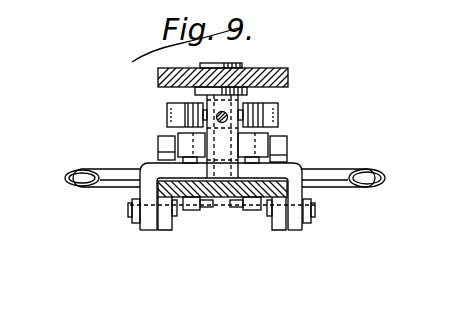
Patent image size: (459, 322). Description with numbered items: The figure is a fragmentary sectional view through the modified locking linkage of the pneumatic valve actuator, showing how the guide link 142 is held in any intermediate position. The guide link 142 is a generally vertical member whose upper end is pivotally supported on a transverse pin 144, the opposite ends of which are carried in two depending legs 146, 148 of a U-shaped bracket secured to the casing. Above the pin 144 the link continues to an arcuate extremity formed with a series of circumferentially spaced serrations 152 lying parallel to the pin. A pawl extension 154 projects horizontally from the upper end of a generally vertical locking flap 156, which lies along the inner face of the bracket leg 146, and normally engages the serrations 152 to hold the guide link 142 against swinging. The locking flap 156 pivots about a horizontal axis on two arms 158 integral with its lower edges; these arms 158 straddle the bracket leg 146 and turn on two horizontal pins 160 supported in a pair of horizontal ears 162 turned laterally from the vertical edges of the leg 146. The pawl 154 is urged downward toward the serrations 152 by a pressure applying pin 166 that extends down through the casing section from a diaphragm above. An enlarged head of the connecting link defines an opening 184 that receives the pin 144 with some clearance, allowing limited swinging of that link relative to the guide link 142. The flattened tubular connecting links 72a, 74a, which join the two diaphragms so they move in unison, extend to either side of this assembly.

The flattened tubular connecting link 72a is at (100, 190).
The flattened tubular connecting link 74a is at (398, 158).
The guide link 142 is at (280, 109).
The transverse pin 144 is at (226, 63).
The depending leg 146 is at (259, 208).
The depending leg 148 is at (290, 76).
The serrations 152 is at (190, 113).
The pawl extension 154 is at (282, 137).
The locking flap 156 is at (158, 168).
The arms 158 is at (146, 231).
The horizontal pins 160 is at (132, 217).
The horizontal ears 162 is at (165, 231).
The pressure applying pin 166 is at (228, 117).
The opening 184 is at (167, 138).